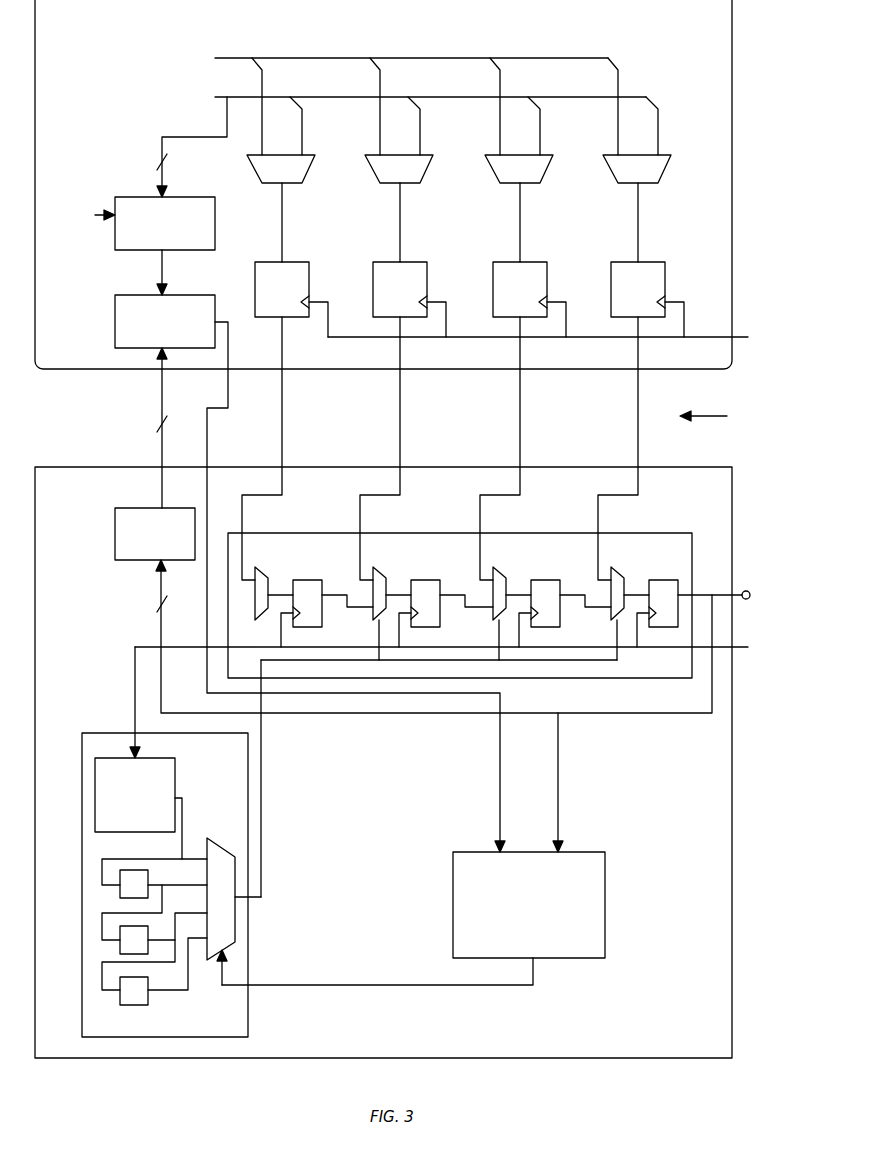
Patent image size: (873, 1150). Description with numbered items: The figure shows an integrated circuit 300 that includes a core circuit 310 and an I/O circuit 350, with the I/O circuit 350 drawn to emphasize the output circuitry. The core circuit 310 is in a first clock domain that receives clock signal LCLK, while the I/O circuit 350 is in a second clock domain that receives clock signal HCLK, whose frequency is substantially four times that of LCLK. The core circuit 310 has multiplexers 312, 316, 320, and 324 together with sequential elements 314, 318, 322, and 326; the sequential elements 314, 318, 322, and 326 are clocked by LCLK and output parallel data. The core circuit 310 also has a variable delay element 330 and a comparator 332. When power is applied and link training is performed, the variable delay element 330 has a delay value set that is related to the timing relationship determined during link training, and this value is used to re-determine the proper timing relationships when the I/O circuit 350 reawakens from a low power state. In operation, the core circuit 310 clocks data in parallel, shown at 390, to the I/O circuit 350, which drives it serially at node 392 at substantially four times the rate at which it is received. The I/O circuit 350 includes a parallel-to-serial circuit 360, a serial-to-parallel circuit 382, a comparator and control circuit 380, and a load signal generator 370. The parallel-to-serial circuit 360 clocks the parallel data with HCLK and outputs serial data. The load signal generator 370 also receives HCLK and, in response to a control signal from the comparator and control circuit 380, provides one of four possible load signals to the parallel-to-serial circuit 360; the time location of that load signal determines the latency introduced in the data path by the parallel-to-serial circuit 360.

The integrated circuit 300 is at (790, 1086).
The core circuit 310 is at (732, 105).
The multiplexer 312 is at (302, 183).
The sequential element 314 is at (309, 270).
The multiplexer 316 is at (420, 183).
The sequential element 318 is at (427, 270).
The multiplexer 320 is at (540, 183).
The sequential element 322 is at (547, 270).
The multiplexer 324 is at (658, 183).
The sequential element 326 is at (665, 270).
The variable delay element 330 is at (215, 207).
The comparator 332 is at (115, 325).
The I/O circuit 350 is at (732, 494).
The parallel-to-serial circuit 360 is at (559, 562).
The load signal generator 370 is at (248, 1010).
The comparator and control circuit 380 is at (605, 897).
The serial-to-parallel circuit 382 is at (115, 530).
The parallel data 390 is at (722, 417).
The node 392 is at (749, 590).